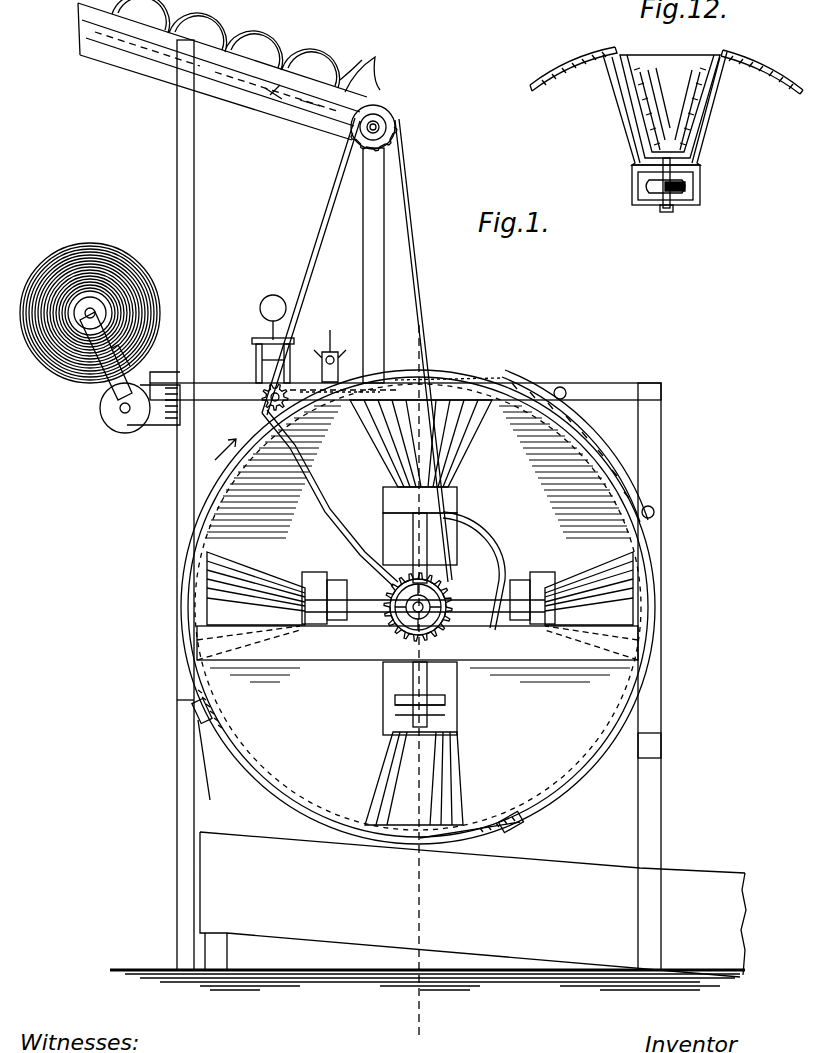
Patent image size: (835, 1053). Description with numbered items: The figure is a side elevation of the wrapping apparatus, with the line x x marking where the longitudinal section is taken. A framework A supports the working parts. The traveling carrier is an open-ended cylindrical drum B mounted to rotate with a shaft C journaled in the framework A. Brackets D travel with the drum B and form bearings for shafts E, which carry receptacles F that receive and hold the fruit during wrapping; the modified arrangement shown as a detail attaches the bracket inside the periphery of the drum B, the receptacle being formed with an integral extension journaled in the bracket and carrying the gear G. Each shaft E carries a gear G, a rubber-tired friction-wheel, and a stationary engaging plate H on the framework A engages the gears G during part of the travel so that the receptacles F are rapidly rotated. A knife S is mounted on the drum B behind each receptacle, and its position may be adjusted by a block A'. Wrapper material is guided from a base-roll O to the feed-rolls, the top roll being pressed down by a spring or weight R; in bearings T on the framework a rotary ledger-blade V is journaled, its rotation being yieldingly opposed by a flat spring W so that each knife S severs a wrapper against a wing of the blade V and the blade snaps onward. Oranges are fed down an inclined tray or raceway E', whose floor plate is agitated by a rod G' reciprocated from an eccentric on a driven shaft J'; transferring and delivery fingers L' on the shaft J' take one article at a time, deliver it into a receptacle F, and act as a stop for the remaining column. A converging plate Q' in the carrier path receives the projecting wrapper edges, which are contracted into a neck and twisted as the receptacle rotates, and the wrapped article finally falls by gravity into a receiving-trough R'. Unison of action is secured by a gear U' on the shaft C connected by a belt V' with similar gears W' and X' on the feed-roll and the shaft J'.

In FIG. 1, the tray or raceway E' is at (202, 70).
In FIG. 1, the rod G' is at (291, 142).
In FIG. 1, the transferring and delivery fingers L' is at (375, 79).
In FIG. 1, the shaft J' is at (397, 122).
In FIG. 1, the gear X' is at (417, 151).
In FIG. 1, the spring or weight R is at (262, 327).
In FIG. 1, the rotary ledger-blade V is at (330, 350).
In FIG. 1, the bearings T is at (340, 378).
In FIG. 1, the gear W' is at (249, 416).
In FIG. 1, the flat or leaf spring W is at (90, 359).
In FIG. 1, the base-roll O is at (102, 420).
In FIG. 1, the belt V' is at (357, 352).
In FIG. 1, the gear U' is at (398, 573).
In FIG. 1, the receptacles F is at (256, 576).
In FIG. 12, the receptacles F is at (665, 108).
In FIG. 1, the brackets D is at (345, 580).
In FIG. 1, the shafts E is at (417, 585).
In FIG. 1, the engaging plate H is at (470, 522).
In FIG. 1, the conical receptacle F' is at (491, 612).
In FIG. 1, the shaft C is at (400, 625).
In FIG. 1, the gear G is at (442, 701).
In FIG. 12, the gear G is at (674, 205).
In FIG. 1, the cylindrical drum B is at (262, 785).
In FIG. 12, the cylindrical drum B is at (563, 62).
In FIG. 1, the knife S is at (196, 722).
In FIG. 1, the framework A is at (402, 546).
In FIG. 1, the block A' is at (391, 782).
In FIG. 1, the converging plate Q' is at (609, 446).
In FIG. 1, the receiving-trough R' is at (473, 904).
In FIG. 1, the section line x is at (425, 677).